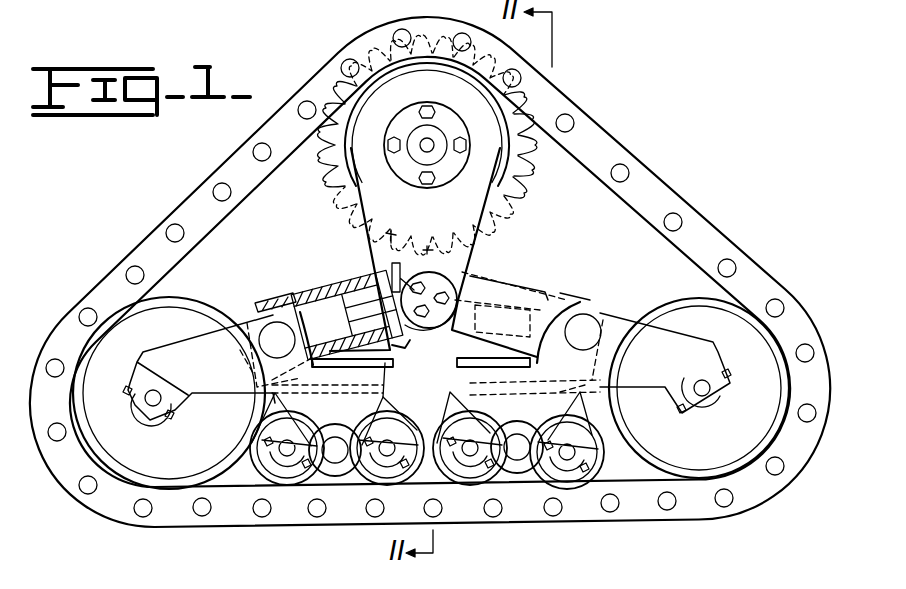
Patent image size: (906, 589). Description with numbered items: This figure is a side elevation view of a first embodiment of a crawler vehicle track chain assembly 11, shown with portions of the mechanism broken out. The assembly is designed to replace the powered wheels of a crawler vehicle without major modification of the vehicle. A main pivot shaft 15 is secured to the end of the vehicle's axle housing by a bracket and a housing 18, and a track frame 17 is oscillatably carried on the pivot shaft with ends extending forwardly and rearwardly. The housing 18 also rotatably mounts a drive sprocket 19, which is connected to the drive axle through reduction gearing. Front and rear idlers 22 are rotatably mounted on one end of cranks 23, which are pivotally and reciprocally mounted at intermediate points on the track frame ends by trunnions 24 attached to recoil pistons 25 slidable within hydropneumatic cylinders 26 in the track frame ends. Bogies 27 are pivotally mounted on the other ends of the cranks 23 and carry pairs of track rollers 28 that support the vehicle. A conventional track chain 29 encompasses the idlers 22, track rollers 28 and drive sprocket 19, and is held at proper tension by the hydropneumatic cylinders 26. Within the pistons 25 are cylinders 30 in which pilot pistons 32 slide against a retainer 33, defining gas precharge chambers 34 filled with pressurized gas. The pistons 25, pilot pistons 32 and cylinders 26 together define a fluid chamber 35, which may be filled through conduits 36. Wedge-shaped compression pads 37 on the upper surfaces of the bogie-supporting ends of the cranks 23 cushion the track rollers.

The track chain assembly 11 is at (575, 97).
The main pivot shaft 15 is at (474, 282).
The track frame 17 is at (532, 284).
The housing 18 is at (558, 246).
The drive sprocket 19 is at (512, 193).
The idlers 22 is at (148, 454).
The cranks 23 is at (212, 381).
The trunnions 24 is at (268, 325).
The recoil pistons 25 is at (297, 284).
The hydropneumatic cylinders 26 is at (380, 305).
The bogies 27 is at (292, 423).
The track rollers 28 is at (345, 478).
The track chain 29 is at (181, 209).
The cylinders 30 is at (346, 290).
The pilot pistons 32 is at (384, 370).
The retainer 33 is at (393, 353).
The gas precharge chambers 34 is at (330, 323).
The fluid chamber 35 is at (447, 318).
The conduits 36 is at (388, 248).
The compression pads 37 is at (492, 350).